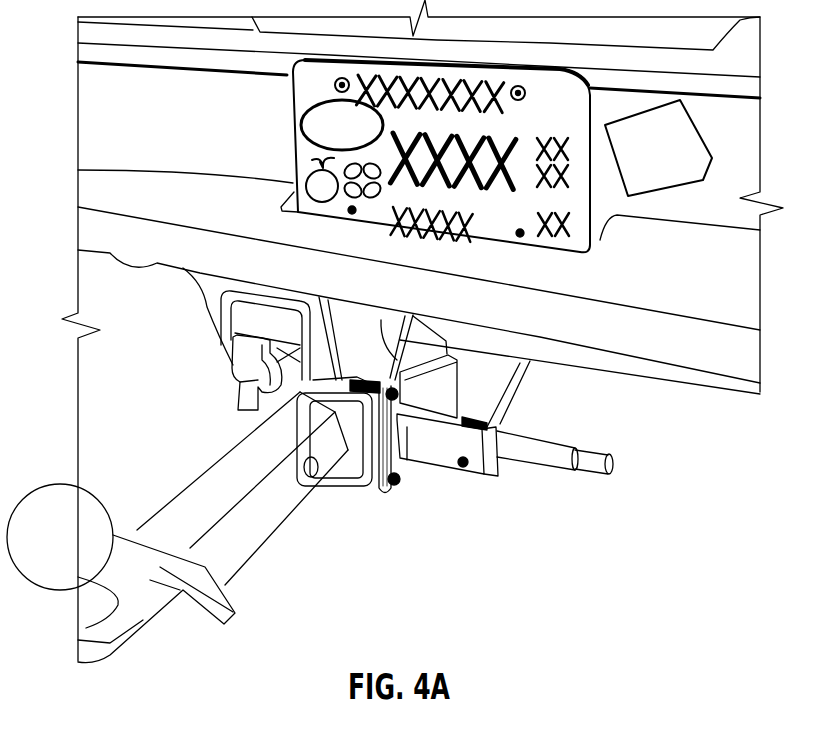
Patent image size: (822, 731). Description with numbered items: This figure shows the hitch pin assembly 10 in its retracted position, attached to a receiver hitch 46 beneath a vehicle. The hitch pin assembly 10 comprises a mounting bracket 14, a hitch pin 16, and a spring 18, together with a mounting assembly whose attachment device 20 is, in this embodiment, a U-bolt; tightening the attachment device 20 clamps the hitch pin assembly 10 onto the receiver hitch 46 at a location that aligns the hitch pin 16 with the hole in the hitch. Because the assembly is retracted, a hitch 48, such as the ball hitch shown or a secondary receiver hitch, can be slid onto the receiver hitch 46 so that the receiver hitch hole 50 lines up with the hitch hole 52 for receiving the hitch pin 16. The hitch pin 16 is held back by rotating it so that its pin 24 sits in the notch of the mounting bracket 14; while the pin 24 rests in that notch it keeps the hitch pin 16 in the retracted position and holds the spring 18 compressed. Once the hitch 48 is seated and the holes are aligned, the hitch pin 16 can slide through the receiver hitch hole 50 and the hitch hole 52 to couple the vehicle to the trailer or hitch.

The hitch pin assembly 10 is at (457, 417).
The mounting bracket 14 is at (481, 476).
The hitch pin 16 is at (555, 443).
The spring 18 is at (487, 424).
The attachment device 20 is at (360, 372).
The pin 24 is at (459, 418).
The receiver hitch 46 is at (353, 480).
The hitch 48 is at (177, 527).
The receiver hitch hole 50 is at (428, 412).
The hitch hole 52 is at (320, 478).